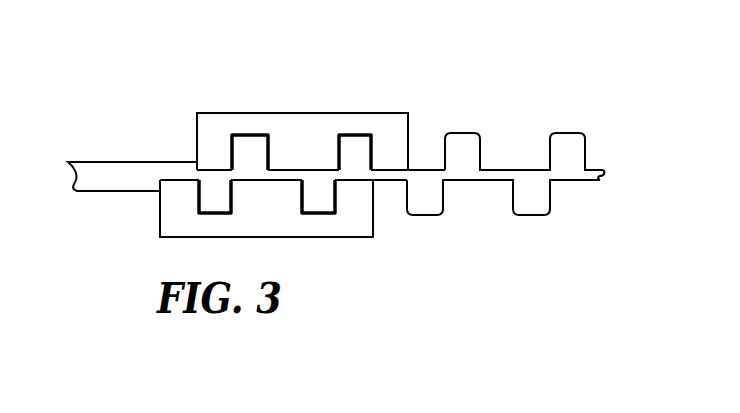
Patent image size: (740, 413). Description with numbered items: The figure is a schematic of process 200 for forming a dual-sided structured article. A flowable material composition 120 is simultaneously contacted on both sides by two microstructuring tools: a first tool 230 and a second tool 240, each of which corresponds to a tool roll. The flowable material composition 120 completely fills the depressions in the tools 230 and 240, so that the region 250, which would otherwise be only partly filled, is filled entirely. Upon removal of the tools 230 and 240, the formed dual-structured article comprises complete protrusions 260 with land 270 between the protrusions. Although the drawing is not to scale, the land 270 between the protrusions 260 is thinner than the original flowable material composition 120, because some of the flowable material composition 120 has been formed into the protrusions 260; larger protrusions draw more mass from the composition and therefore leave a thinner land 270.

The process 200 is at (513, 55).
The flowable material composition 120 is at (120, 175).
The Tool 1 230 is at (303, 122).
The Tool 2 240 is at (297, 223).
The region 250 is at (375, 132).
The complete protrusions 260 is at (462, 143).
The land 270 is at (597, 168).